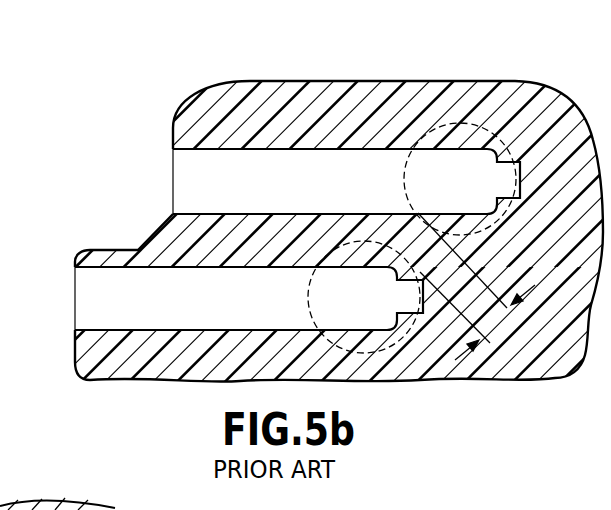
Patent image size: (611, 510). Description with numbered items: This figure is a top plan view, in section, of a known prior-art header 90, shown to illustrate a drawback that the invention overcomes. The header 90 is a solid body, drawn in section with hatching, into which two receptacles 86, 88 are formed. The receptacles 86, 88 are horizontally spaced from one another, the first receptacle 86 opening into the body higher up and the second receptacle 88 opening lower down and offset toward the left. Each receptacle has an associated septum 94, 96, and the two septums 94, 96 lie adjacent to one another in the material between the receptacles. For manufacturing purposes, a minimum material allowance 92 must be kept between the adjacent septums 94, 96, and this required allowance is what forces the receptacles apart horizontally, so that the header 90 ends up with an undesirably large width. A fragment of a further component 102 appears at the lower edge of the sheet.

The upper groove 86 is at (217, 150).
The lower groove 88 is at (118, 267).
The body 90 is at (165, 365).
The shear plane 92 is at (470, 280).
The stress region 94 is at (455, 124).
The stress region 96 is at (308, 302).
The body 102 is at (70, 500).